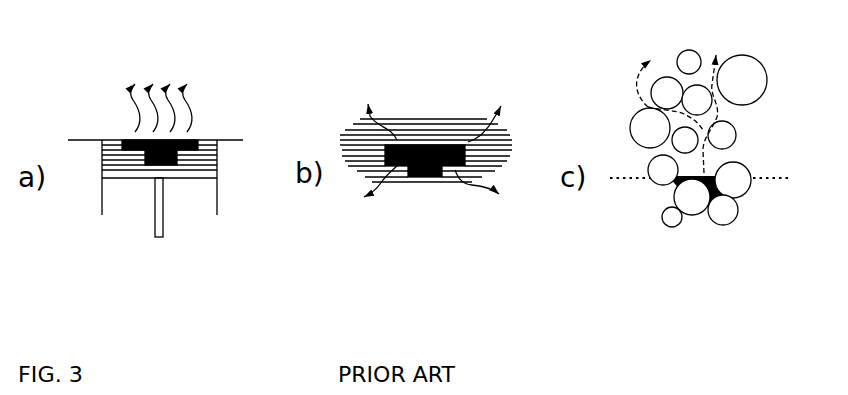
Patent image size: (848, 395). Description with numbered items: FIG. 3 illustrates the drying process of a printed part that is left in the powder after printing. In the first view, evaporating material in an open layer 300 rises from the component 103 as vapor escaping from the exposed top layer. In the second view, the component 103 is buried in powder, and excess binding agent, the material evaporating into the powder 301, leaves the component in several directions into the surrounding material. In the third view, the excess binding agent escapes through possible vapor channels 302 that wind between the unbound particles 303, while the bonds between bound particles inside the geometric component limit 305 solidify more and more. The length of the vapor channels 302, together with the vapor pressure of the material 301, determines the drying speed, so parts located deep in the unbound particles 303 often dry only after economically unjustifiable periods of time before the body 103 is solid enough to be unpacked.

The component 103 is at (145, 163).
The evaporating material in an open layer 300 is at (128, 107).
The material evaporating into the powder 301 is at (383, 185).
The possible vapor channel 302 is at (641, 92).
The unbound particle 303 is at (737, 79).
The geometric component limit 305 is at (622, 180).